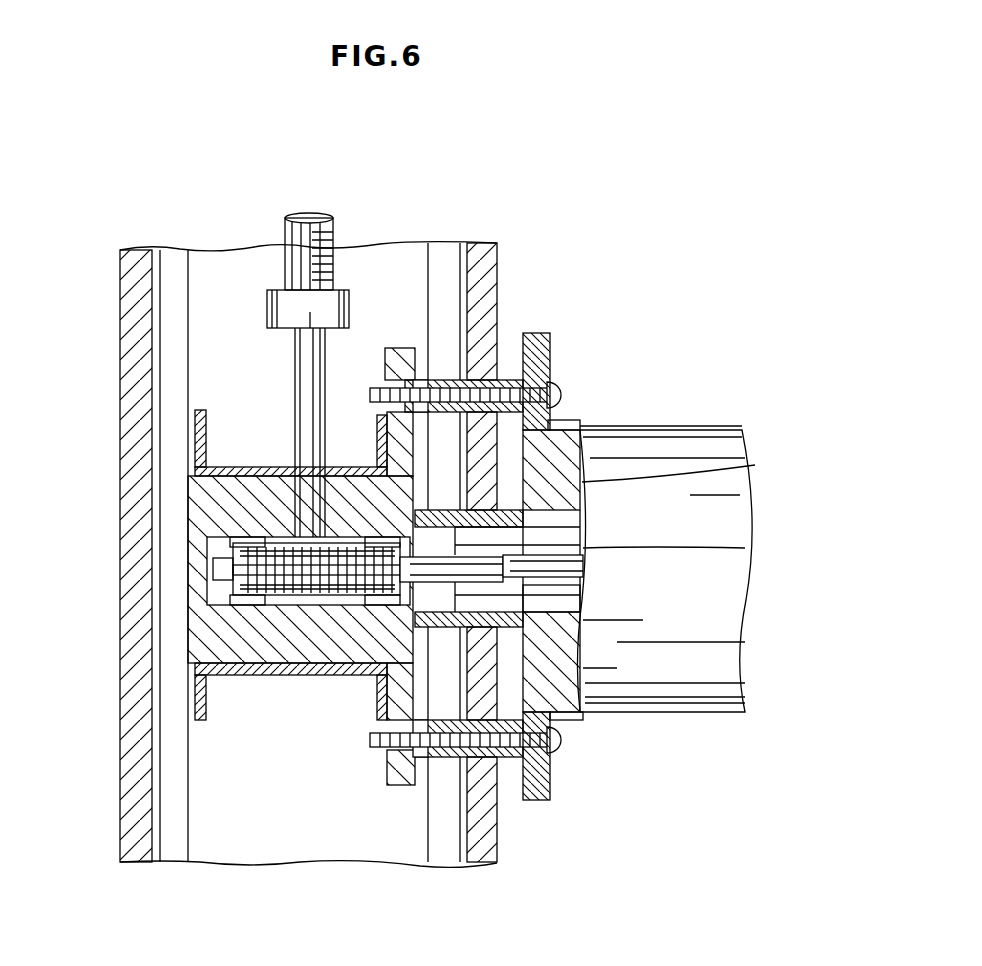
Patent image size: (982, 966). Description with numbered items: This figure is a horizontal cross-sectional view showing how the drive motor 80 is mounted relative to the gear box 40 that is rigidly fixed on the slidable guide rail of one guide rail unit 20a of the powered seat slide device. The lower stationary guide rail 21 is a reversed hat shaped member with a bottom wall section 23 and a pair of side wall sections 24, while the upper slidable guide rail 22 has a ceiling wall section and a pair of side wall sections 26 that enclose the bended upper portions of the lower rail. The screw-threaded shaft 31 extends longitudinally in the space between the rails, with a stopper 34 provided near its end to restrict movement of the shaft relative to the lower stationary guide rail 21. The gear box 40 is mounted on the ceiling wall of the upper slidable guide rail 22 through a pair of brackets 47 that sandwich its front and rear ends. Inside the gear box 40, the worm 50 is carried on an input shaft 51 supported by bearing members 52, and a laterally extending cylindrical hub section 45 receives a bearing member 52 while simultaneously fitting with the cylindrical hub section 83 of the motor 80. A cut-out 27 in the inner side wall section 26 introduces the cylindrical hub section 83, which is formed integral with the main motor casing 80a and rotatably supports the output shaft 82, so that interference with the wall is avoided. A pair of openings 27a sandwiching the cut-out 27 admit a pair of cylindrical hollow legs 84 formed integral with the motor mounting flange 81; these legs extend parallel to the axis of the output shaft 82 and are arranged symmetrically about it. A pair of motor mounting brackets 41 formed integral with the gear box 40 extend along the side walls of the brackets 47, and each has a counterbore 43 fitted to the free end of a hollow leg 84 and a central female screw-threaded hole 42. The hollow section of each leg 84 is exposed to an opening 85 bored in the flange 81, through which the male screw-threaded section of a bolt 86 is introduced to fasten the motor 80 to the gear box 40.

The guide rail unit 20a is at (422, 230).
The lower stationary guide rail 21 is at (210, 272).
The upper slidable guide rail 22 is at (137, 268).
The bottom wall section 23 is at (300, 838).
The side wall sections 24 is at (168, 845).
The side wall sections 26 is at (493, 257).
The cut-out 27 is at (613, 562).
The openings 27a is at (573, 427).
The screw-threaded shaft 31 is at (318, 214).
The stoppers 34 is at (335, 300).
The gear box 40 is at (229, 567).
The motor mounting brackets 41 is at (397, 432).
The female screw-threaded hole 42 is at (385, 382).
The counterbore 43 is at (413, 382).
The cylindrical hub section 45 is at (582, 512).
The brackets 47 is at (212, 423).
The worm 50 is at (235, 528).
The input shaft 51 is at (575, 592).
The bearing members 52 is at (213, 586).
The drive motor 80 is at (693, 520).
The main motor casing 80a is at (584, 430).
The motor mounting flange 81 is at (540, 350).
The output shaft 82 is at (600, 540).
The cylindrical hub section 83 is at (755, 466).
The cylindrical hollow legs 84 is at (443, 378).
The opening 85 is at (505, 385).
The bolt 86 is at (560, 390).